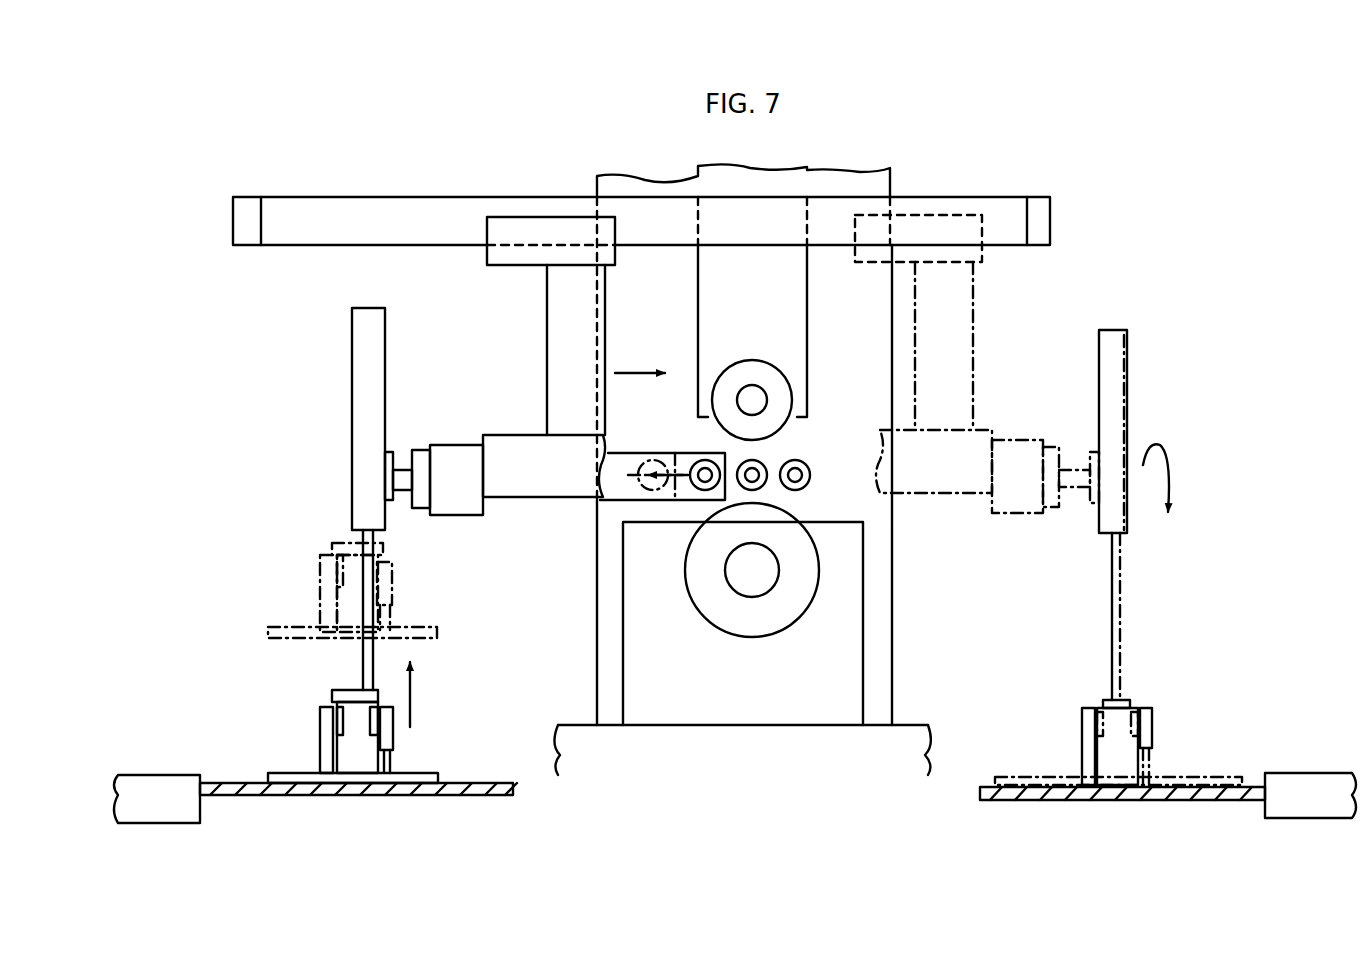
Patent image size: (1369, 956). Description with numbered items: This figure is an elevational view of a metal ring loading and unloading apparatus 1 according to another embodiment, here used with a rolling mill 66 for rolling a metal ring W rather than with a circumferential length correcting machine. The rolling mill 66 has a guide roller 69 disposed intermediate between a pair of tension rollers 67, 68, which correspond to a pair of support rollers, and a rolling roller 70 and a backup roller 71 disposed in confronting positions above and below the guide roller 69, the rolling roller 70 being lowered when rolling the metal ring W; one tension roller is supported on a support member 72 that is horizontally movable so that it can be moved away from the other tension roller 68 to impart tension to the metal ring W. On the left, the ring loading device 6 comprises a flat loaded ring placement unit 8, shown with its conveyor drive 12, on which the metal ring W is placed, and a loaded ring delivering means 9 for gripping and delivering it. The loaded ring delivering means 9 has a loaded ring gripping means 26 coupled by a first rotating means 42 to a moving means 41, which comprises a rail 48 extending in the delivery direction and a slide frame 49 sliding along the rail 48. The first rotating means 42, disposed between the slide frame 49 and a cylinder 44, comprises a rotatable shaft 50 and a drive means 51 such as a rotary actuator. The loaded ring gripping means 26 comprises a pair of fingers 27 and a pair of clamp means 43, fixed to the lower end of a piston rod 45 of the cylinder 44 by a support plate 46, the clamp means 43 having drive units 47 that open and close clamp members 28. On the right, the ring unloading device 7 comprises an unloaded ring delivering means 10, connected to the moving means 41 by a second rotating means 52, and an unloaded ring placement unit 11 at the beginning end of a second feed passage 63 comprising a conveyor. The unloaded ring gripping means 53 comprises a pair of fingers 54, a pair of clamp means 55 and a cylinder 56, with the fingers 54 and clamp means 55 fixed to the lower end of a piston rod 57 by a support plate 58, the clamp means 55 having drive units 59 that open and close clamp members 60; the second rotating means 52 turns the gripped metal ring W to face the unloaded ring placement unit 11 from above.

The metal ring loading and unloading apparatus 1 is at (1006, 152).
The ring loading device 6 is at (215, 581).
The ring unloading device 7 is at (1262, 578).
The loaded ring placement unit 8 is at (282, 760).
The loaded ring delivering means 9 is at (311, 445).
The unloaded ring delivering means 10 is at (1175, 380).
The unloaded ring placement unit 11 is at (1030, 762).
The conveyor drive 12 is at (180, 775).
The loaded ring gripping means 26 is at (312, 551).
The fingers 27 is at (320, 598).
The clamp members 28 is at (396, 768).
The moving means 41 is at (432, 170).
The first rotating means 42 is at (453, 437).
The clamp means 43 is at (395, 573).
The cylinder 44 is at (366, 344).
The piston rod 45 is at (395, 643).
The support plate 46 is at (350, 694).
The drive units 47 is at (392, 723).
The rail 48 is at (331, 212).
The slide frame 49 is at (548, 405).
The rotatable shaft 50 is at (399, 450).
The drive means 51 is at (478, 500).
The second rotating means 52 is at (1050, 522).
The unloaded ring gripping means 53 is at (1150, 678).
The fingers 54 is at (1088, 756).
The clamp means 55 is at (1156, 722).
The cylinder 56 is at (1115, 347).
The piston rod 57 is at (1121, 577).
The support plate 58 is at (1138, 700).
The drive units 59 is at (1152, 735).
The clamp members 60 is at (1152, 765).
The second feed passage 63 is at (1326, 773).
The rolling mill 66 is at (851, 183).
The tension roller 67 is at (651, 458).
The tension roller 68 is at (812, 462).
The guide roller 69 is at (766, 461).
The rolling roller 70 is at (782, 392).
The lower roller 71 is at (796, 541).
The support member 72 is at (690, 503).
The metal ring W is at (440, 627).